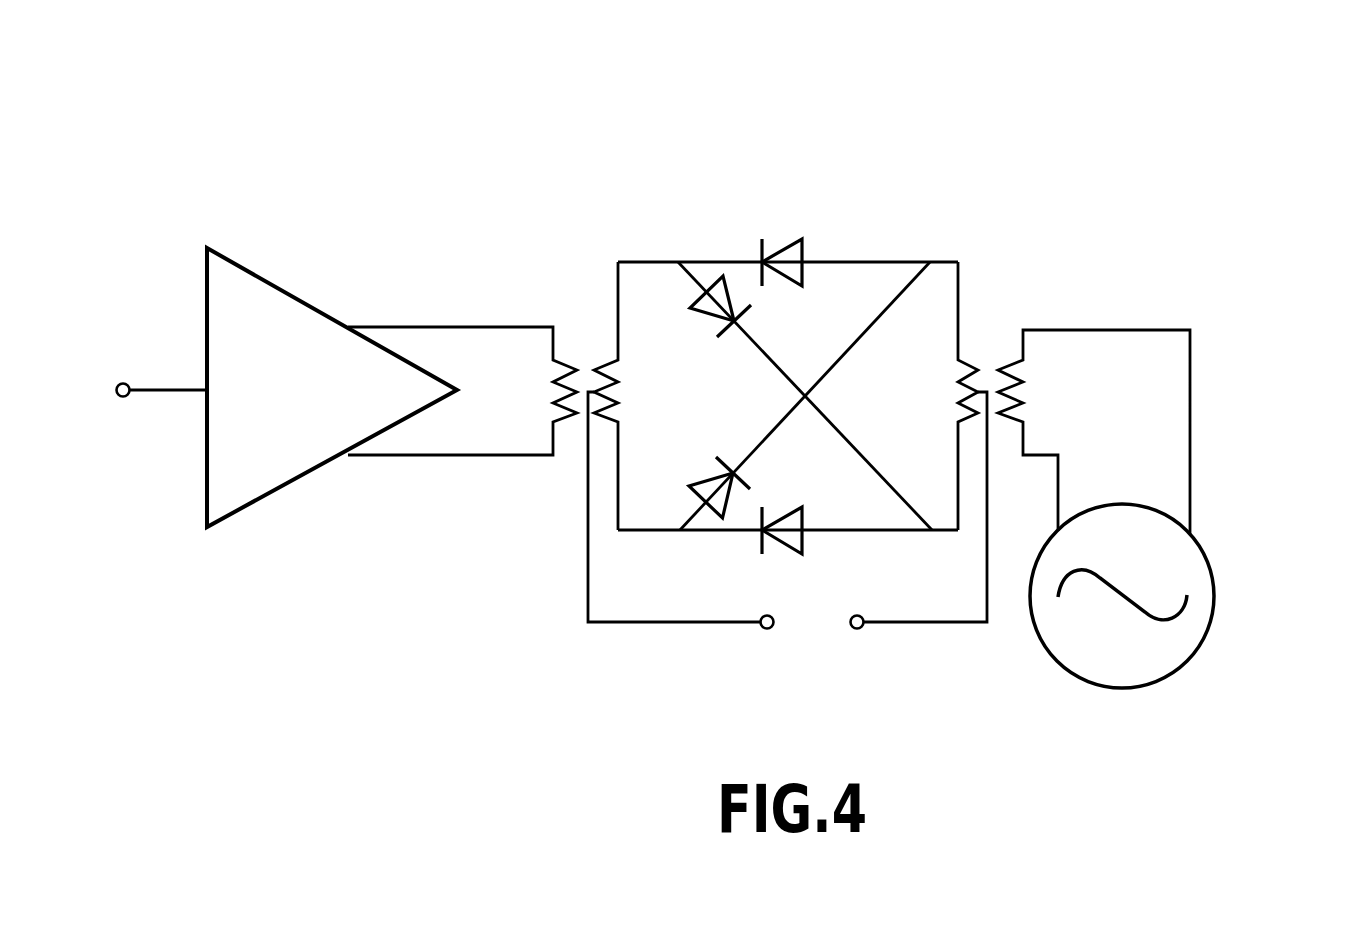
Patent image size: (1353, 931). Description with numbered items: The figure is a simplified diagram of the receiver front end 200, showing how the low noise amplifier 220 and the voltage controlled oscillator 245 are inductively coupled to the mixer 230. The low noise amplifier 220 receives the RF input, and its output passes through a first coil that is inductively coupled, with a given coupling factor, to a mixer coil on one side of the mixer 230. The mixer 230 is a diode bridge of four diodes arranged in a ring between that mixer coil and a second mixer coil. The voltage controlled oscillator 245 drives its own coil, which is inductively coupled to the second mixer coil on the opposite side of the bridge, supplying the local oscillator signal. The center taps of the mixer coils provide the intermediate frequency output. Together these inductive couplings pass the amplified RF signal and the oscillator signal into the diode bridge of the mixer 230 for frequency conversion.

The receiver circuit 200 is at (1205, 140).
The LNA 220 is at (263, 280).
The mixer 230 is at (870, 248).
The VCO 245 is at (1210, 567).